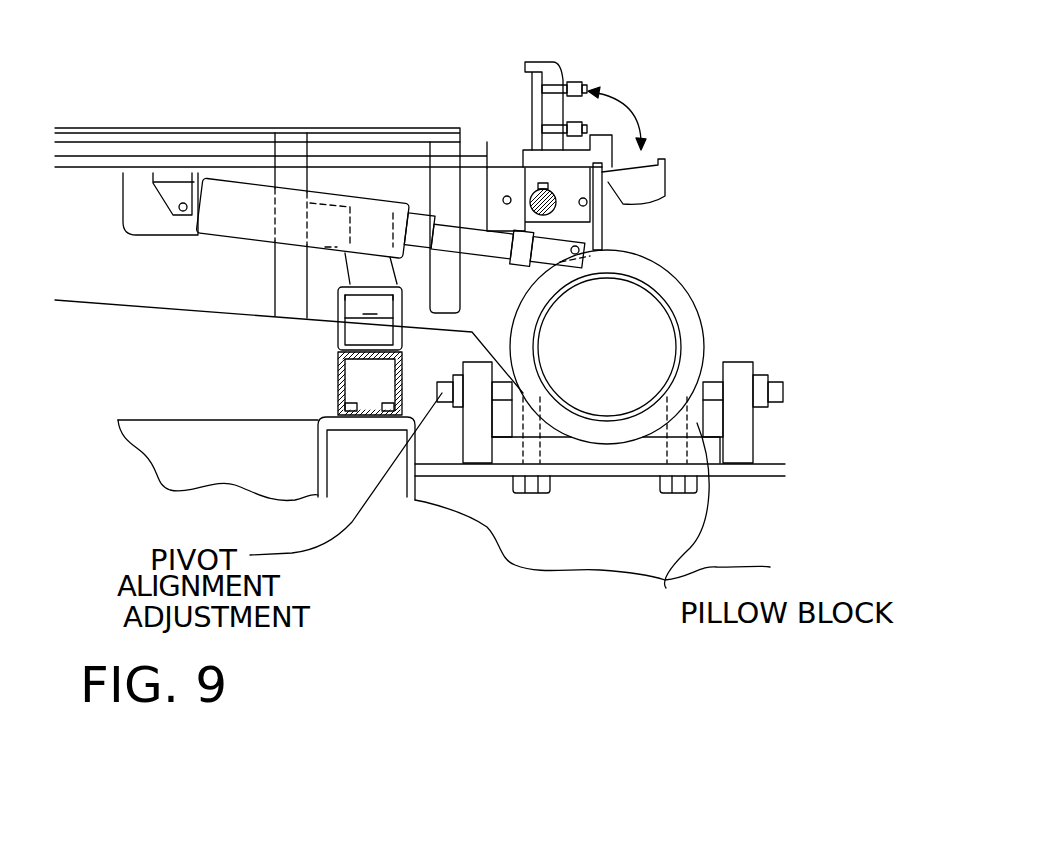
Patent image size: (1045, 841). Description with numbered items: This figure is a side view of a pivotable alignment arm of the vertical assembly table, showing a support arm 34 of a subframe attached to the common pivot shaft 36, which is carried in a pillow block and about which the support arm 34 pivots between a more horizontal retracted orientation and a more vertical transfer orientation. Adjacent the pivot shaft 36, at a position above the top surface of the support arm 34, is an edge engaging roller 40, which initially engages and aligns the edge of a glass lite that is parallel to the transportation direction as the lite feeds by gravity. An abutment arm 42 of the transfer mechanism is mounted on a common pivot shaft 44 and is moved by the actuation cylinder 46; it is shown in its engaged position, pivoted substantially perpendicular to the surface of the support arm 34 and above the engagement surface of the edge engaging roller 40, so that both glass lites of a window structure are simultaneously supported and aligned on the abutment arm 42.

The support arm 34 is at (110, 130).
The pivot shaft 36 is at (583, 383).
The edge engaging roller 40 is at (635, 195).
The abutment arm 42 is at (562, 66).
The pivot shaft 44 is at (602, 173).
The actuation cylinder 46 is at (247, 223).